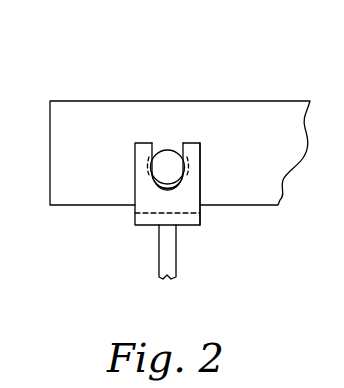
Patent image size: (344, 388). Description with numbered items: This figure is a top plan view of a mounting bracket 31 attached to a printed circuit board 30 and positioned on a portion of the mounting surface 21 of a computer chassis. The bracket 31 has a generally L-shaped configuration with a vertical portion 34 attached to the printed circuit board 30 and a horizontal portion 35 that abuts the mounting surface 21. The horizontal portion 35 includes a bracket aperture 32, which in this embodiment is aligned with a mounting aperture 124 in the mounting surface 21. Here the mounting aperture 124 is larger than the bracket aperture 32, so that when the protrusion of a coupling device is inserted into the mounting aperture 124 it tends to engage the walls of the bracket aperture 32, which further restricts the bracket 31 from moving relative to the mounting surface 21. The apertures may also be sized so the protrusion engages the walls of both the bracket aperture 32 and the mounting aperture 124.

The mounting surface 21 is at (89, 118).
The printed circuit board 30 is at (176, 257).
The mounting bracket 31 is at (160, 147).
The bracket aperture 32 is at (162, 130).
The vertical portion 34 is at (200, 218).
The horizontal portion 35 is at (200, 178).
The mounting aperture 124 is at (177, 148).